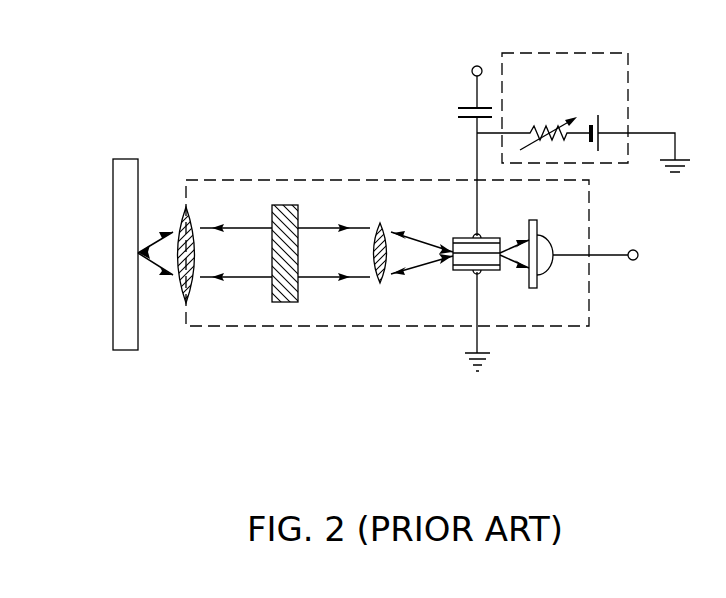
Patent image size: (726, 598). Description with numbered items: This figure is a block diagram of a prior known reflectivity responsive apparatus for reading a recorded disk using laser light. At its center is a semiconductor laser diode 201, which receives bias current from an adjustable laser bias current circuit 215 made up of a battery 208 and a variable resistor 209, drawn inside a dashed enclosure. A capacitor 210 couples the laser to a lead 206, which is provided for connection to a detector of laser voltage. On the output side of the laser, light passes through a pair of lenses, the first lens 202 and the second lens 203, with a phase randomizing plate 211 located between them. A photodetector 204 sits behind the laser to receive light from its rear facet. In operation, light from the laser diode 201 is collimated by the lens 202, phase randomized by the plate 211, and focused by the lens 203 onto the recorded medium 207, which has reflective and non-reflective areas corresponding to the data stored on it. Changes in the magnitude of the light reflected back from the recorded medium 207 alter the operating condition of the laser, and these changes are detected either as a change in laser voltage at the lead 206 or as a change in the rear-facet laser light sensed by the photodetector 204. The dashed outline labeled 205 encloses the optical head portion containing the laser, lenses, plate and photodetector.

The semiconductor laser diode 201 is at (487, 240).
The lens 202 is at (384, 225).
The lens 203 is at (176, 225).
The photodetector 204 is at (541, 237).
The optical head 205 is at (350, 327).
The lead 206 is at (472, 71).
The recorded medium 207 is at (125, 185).
The battery 208 is at (593, 122).
The variable resistor 209 is at (535, 128).
The capacitor 210 is at (469, 118).
The phase randomizing plate 211 is at (280, 208).
The adjustable laser bias current circuit 215 is at (547, 47).